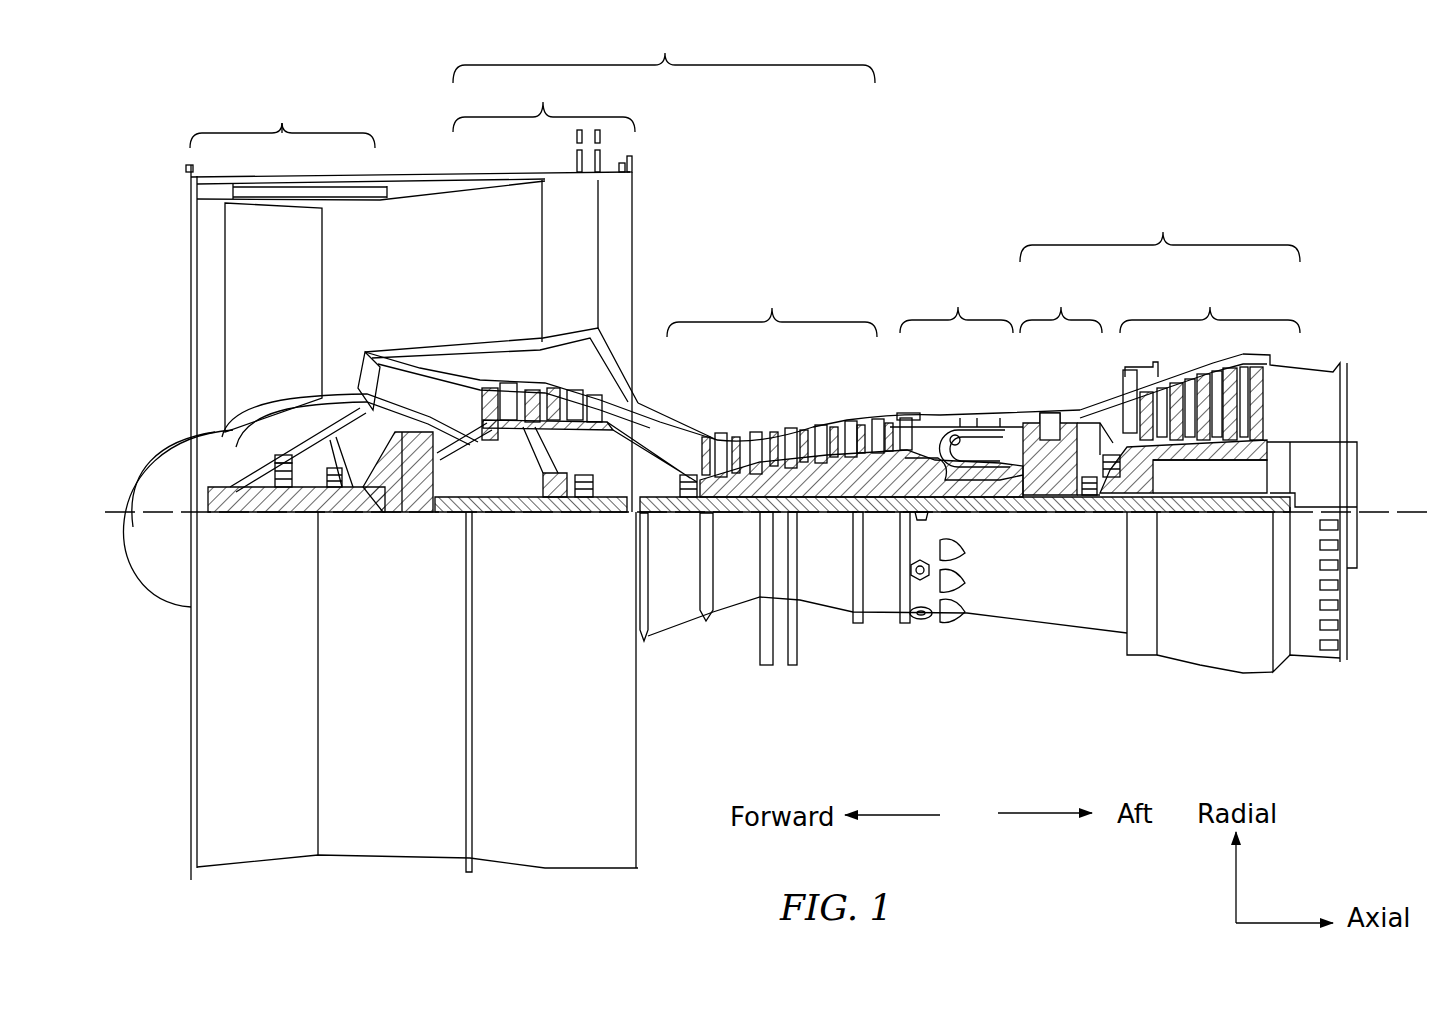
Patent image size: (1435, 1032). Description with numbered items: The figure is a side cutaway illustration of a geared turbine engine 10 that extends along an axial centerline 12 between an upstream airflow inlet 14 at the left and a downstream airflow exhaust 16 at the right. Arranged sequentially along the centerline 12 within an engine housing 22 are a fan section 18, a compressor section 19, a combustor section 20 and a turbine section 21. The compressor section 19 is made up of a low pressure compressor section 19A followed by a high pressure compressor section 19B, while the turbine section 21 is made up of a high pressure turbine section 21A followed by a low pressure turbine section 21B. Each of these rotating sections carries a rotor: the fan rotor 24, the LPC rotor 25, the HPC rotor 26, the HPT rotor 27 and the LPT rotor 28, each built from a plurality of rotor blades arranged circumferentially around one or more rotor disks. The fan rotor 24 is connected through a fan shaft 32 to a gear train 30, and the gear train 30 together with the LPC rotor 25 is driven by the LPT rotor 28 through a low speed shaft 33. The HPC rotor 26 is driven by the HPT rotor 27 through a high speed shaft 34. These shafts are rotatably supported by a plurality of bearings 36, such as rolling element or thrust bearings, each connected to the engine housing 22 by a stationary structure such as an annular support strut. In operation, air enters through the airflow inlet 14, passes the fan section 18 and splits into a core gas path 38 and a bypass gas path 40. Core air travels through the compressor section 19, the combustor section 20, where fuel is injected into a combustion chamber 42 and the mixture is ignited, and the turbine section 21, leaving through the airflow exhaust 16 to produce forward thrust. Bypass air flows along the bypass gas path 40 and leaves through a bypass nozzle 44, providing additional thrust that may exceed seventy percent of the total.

The geared turbine engine 10 is at (150, 152).
The axial centerline 12 is at (1411, 514).
The airflow inlet 14 is at (189, 258).
The airflow exhaust 16 is at (1347, 398).
The fan section 18 is at (282, 474).
The compressor section 19 is at (649, 252).
The low pressure compressor section 19A is at (537, 277).
The high pressure compressor section 19B is at (803, 378).
The combustor section 20 is at (985, 380).
The turbine section 21 is at (1173, 346).
The high pressure turbine section 21A is at (1143, 388).
The low pressure turbine section 21B is at (1213, 387).
The engine housing 22 is at (655, 634).
The fan rotor 24 is at (218, 437).
The LPC rotor 25 is at (540, 462).
The HPC rotor 26 is at (826, 474).
The HPT rotor 27 is at (1047, 485).
The LPT rotor 28 is at (1207, 453).
The gear train 30 is at (420, 516).
The fan shaft 32 is at (265, 514).
The low speed shaft 33 is at (880, 523).
The high speed shaft 34 is at (977, 497).
The bearings 36 is at (327, 484).
The core gas path 38 is at (655, 436).
The bypass gas path 40 is at (472, 273).
The combustion chamber 42 is at (967, 442).
The bypass nozzle 44 is at (634, 232).